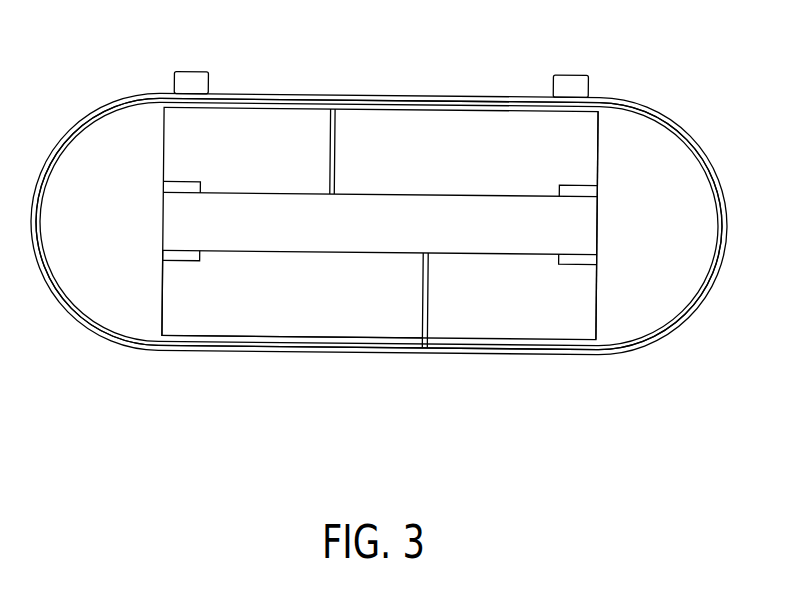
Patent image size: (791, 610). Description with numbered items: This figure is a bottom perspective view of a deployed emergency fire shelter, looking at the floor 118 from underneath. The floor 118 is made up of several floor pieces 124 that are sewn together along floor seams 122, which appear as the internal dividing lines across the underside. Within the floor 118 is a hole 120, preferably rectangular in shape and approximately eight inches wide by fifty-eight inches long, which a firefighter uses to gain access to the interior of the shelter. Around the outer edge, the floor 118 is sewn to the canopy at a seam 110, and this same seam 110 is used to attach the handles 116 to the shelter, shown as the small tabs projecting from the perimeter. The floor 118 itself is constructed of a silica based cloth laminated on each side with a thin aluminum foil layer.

The seam 110 is at (190, 347).
The handles 116 is at (207, 80).
The floor 118 is at (516, 395).
The hole 120 is at (392, 230).
The floor seams 122 is at (273, 287).
The floor pieces 124 is at (421, 306).